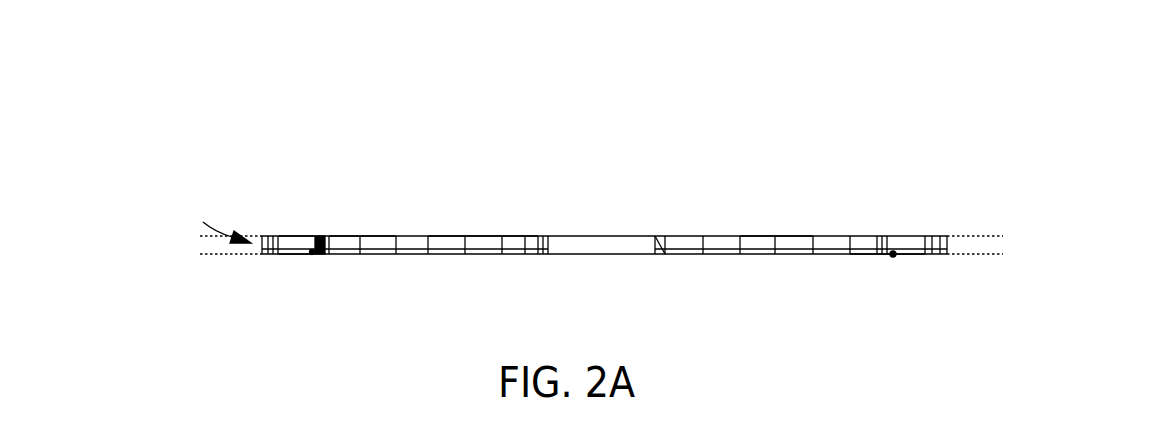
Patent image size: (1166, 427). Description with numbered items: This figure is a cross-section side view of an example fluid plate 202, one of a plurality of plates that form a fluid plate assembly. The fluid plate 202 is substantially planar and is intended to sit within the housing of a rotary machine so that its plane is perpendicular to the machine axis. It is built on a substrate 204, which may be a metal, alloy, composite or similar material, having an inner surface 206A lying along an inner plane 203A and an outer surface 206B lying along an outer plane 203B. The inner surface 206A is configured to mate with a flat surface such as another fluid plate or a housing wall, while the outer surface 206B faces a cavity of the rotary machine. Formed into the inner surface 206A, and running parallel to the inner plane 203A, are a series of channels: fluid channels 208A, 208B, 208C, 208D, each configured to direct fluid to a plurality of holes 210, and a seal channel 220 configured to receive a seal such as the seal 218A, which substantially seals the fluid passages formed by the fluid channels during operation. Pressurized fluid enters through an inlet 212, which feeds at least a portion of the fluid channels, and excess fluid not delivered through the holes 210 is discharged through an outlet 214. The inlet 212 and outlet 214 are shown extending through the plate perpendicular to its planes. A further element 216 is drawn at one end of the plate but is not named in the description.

The fluid plate 202 is at (216, 219).
The inner plane 203A is at (992, 254).
The outer plane 203B is at (948, 236).
The substrate 204 is at (363, 236).
The inner surface 206A is at (280, 254).
The outer surface 206B is at (545, 251).
The fluid channel 208A is at (525, 236).
The fluid channel 208B is at (665, 252).
The fluid channel 208C is at (775, 252).
The fluid channel 208D is at (893, 254).
The holes 210 is at (463, 236).
The inlet 212 is at (318, 237).
The outlet 214 is at (883, 236).
The end cap 216 is at (932, 236).
The seal 218A is at (310, 254).
The seal channel 220 is at (312, 252).